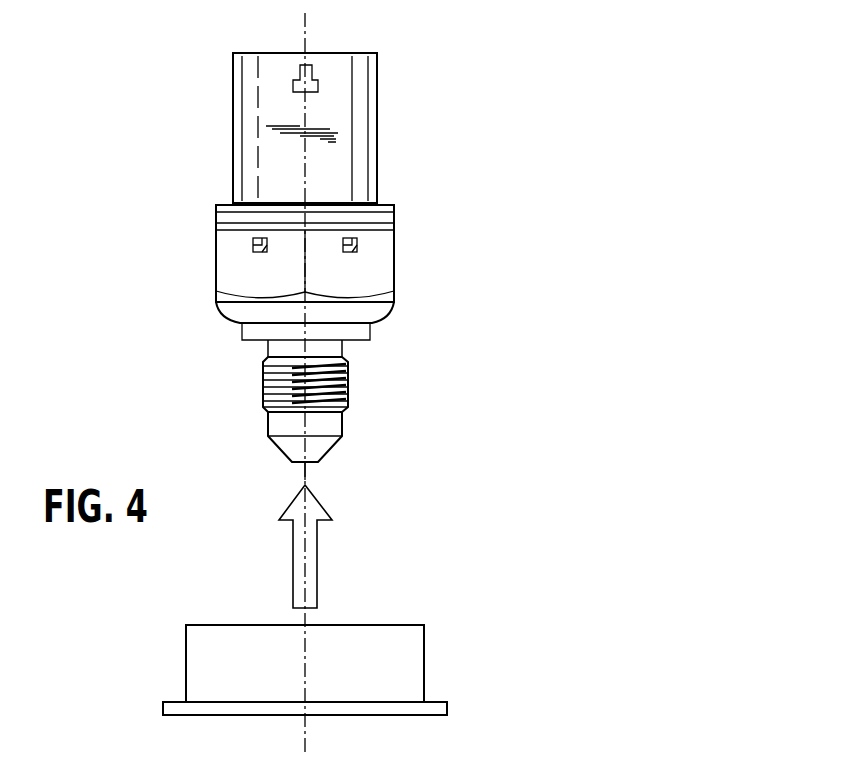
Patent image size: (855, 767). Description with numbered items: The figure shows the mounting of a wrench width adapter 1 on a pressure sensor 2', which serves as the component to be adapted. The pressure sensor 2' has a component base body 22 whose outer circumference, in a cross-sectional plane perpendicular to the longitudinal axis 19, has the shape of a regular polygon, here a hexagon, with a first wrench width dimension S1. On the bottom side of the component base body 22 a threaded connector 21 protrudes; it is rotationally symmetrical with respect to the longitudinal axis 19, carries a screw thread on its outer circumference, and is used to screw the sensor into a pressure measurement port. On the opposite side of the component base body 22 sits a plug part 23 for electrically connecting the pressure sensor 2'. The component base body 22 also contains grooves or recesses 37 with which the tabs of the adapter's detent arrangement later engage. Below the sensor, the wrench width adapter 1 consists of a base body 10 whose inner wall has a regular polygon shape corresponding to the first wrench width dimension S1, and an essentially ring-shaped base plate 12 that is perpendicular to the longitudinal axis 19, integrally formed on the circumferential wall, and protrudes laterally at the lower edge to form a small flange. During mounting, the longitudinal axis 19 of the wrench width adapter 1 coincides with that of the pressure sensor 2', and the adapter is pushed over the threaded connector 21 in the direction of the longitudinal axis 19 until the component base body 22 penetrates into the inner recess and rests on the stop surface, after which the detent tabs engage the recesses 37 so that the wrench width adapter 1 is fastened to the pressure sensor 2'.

The wrench width adapter 1 is at (527, 631).
The base body 10 is at (426, 649).
The base plate 12 is at (434, 708).
The longitudinal axis 19 is at (307, 24).
The threaded connector 21 is at (350, 387).
The component base body 22 is at (396, 232).
The plug part 23 is at (347, 140).
The grooves or recesses 37 is at (250, 245).
The pressure sensor 2' is at (115, 98).
The first wrench width dimension S1 is at (148, 253).